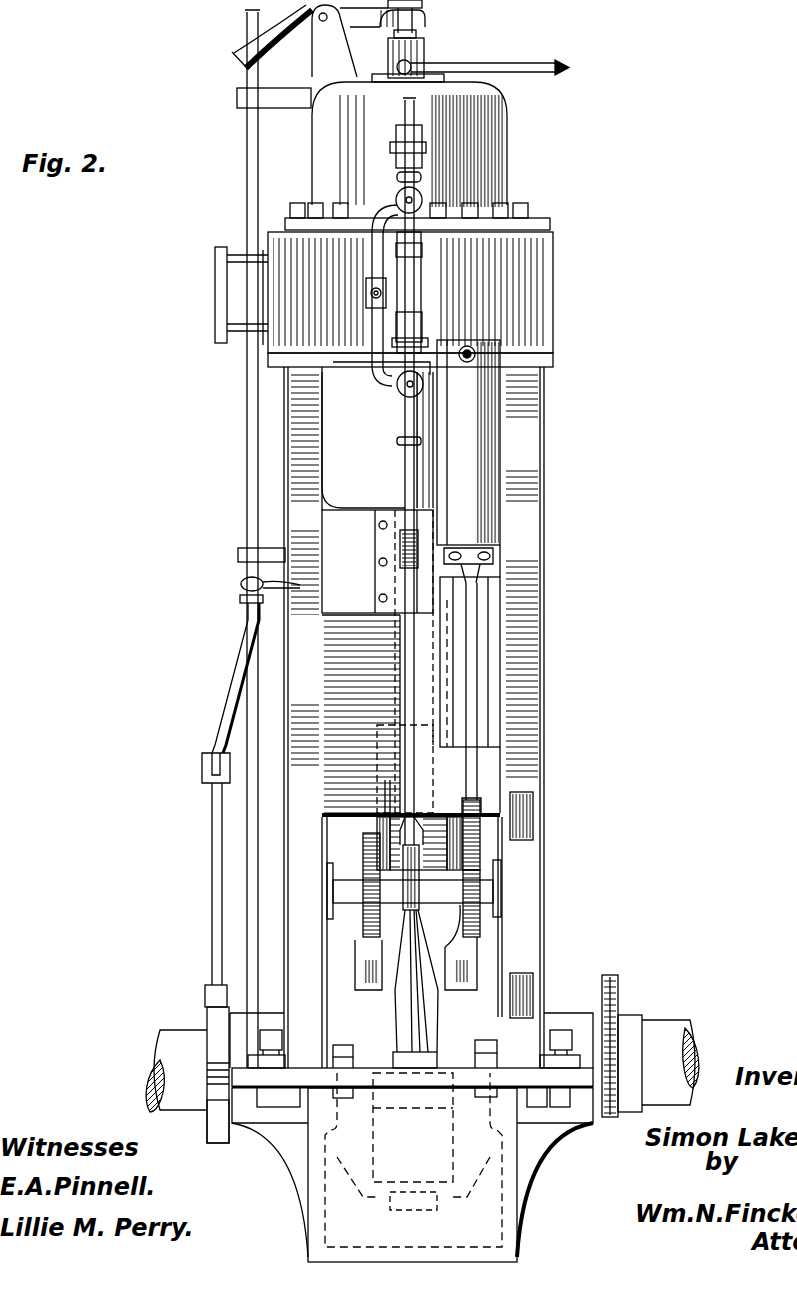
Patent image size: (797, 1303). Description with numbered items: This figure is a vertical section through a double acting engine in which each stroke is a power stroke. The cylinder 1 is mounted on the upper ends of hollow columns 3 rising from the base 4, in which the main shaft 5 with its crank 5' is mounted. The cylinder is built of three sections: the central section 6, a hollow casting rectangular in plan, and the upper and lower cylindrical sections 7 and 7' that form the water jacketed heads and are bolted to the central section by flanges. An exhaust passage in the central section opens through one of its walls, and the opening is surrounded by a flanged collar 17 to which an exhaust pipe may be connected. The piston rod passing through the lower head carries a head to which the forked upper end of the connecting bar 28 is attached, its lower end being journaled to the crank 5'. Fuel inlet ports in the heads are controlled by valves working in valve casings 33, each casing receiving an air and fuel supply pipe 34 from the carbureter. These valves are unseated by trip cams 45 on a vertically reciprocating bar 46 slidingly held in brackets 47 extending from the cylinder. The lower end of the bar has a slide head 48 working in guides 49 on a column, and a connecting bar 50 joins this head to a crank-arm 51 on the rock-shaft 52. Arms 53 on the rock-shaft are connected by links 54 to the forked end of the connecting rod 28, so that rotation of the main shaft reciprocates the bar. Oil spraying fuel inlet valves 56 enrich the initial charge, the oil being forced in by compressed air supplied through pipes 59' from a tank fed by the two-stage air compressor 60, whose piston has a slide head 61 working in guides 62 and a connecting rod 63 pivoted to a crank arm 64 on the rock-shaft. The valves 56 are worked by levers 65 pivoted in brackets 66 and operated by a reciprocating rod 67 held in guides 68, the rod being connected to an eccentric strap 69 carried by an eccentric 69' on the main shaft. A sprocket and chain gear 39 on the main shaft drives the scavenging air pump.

The cylinder 1 is at (568, 219).
The column 3 is at (530, 573).
The base 4 is at (518, 1216).
The main shaft 5 is at (426, 1077).
The crank 5' is at (379, 1165).
The central section 6 is at (554, 276).
The upper cylindrical section 7 is at (422, 140).
The lower cylindrical section 7' is at (311, 435).
The flanged collar 17 is at (216, 294).
The connecting bar 28 is at (383, 821).
The valve casing 33 is at (422, 199).
The air and fuel supply pipe 34 is at (373, 324).
The sprocket and chain gear 39 is at (615, 1013).
The trip cam 45 is at (396, 177).
The reciprocating bar 46 is at (416, 110).
The bracket 47 is at (398, 146).
The slide head 48 is at (404, 552).
The guide 49 is at (395, 535).
The connecting bar 50 is at (411, 655).
The crank-arm 51 is at (413, 880).
The rock-shaft 52 is at (386, 812).
The arm 53 is at (479, 943).
The link 54 is at (364, 858).
The fuel inlet valve 56 is at (427, 51).
The pipe 59' is at (562, 63).
The air compressor 60 is at (475, 420).
The slide head 61 is at (480, 565).
The guide 62 is at (483, 697).
The connecting rod 63 is at (470, 665).
The crank arm 64 is at (481, 848).
The lever 65 is at (222, 586).
The bracket 66 is at (354, 42).
The reciprocating rod 67 is at (248, 193).
The guide 68 is at (287, 109).
The eccentric strap 69 is at (193, 1064).
The eccentric 69' is at (199, 1147).